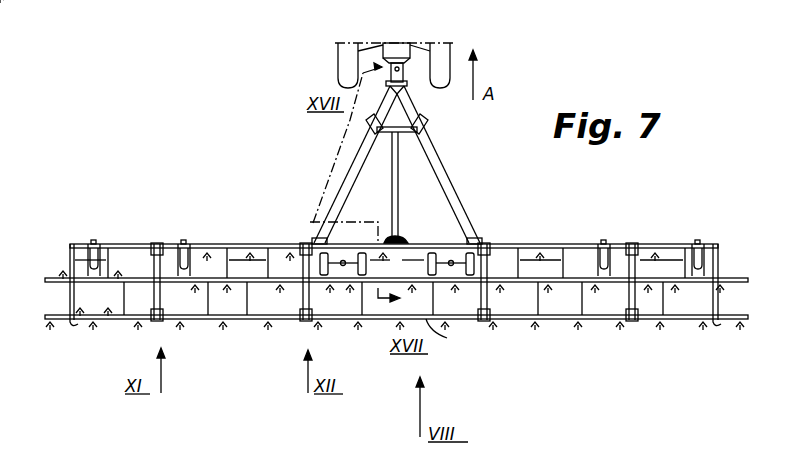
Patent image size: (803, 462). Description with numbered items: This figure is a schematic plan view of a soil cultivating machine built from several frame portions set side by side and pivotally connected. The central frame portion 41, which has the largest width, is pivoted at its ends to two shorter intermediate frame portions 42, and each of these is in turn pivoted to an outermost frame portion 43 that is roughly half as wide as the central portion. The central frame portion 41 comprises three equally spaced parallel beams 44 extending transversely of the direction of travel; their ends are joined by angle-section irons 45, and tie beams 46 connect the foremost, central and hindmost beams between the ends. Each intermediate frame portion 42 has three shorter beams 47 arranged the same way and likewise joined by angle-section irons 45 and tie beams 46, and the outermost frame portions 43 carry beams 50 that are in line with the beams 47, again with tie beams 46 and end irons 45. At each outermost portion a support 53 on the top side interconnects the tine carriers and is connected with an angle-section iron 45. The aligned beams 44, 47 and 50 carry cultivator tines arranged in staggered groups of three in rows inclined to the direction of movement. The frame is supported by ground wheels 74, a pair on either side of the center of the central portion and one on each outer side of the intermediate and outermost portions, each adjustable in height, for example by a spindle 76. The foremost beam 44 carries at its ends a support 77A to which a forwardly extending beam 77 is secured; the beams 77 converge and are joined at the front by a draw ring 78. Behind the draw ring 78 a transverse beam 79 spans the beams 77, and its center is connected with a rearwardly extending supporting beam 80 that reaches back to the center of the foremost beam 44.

The central frame portion 41 is at (398, 268).
The intermediate frame portion 42 is at (395, 271).
The outermost frame portion 43 is at (379, 271).
The beams 44 is at (415, 241).
The angle-section irons 45 is at (70, 250).
The tie beams 46 is at (124, 320).
The beams 47 is at (250, 244).
The beams 50 is at (137, 244).
The support 53 is at (70, 302).
The ground wheels 74 is at (92, 278).
The spindle 76 is at (86, 240).
The forwardly extending beams 77 is at (348, 150).
The support 77A is at (326, 236).
The draw ring 78 is at (406, 84).
The transverse beam 79 is at (382, 132).
The supporting beam 80 is at (399, 212).